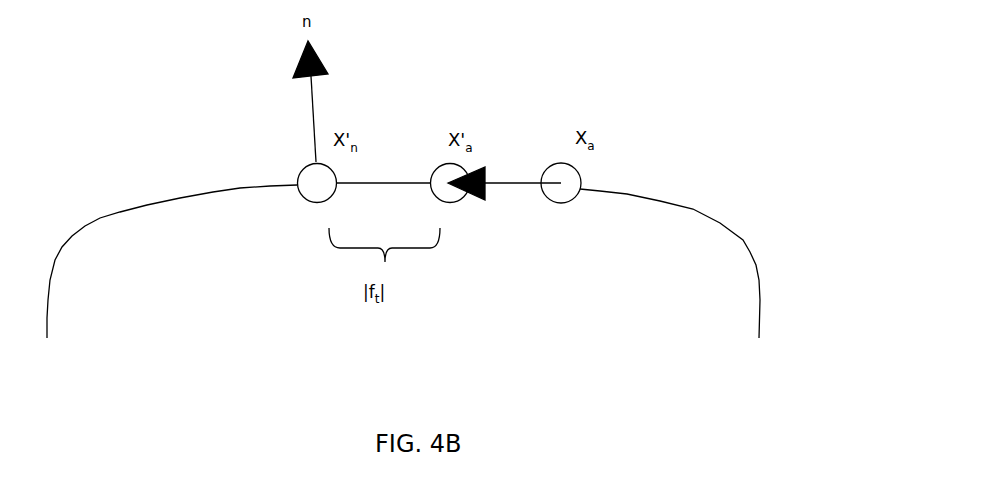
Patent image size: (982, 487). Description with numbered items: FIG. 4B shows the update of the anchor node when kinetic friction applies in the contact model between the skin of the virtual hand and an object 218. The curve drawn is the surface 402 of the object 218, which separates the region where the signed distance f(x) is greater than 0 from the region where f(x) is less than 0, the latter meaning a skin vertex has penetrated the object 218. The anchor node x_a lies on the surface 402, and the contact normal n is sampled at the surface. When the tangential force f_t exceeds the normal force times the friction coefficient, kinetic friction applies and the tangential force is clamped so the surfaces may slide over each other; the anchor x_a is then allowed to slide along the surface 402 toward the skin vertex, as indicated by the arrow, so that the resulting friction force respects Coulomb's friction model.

The surface 402 is at (698, 212).
The object 218 is at (683, 262).
The signed distance function zero level 0 is at (137, 214).